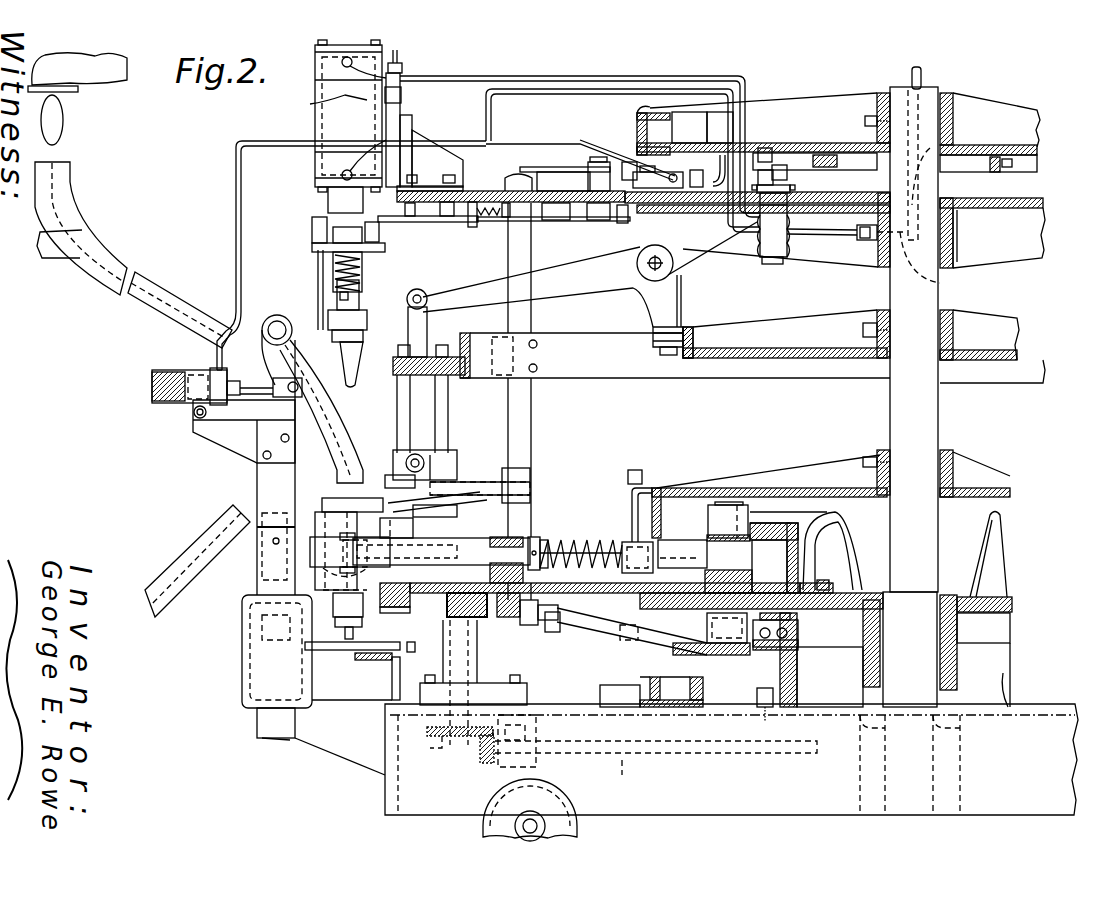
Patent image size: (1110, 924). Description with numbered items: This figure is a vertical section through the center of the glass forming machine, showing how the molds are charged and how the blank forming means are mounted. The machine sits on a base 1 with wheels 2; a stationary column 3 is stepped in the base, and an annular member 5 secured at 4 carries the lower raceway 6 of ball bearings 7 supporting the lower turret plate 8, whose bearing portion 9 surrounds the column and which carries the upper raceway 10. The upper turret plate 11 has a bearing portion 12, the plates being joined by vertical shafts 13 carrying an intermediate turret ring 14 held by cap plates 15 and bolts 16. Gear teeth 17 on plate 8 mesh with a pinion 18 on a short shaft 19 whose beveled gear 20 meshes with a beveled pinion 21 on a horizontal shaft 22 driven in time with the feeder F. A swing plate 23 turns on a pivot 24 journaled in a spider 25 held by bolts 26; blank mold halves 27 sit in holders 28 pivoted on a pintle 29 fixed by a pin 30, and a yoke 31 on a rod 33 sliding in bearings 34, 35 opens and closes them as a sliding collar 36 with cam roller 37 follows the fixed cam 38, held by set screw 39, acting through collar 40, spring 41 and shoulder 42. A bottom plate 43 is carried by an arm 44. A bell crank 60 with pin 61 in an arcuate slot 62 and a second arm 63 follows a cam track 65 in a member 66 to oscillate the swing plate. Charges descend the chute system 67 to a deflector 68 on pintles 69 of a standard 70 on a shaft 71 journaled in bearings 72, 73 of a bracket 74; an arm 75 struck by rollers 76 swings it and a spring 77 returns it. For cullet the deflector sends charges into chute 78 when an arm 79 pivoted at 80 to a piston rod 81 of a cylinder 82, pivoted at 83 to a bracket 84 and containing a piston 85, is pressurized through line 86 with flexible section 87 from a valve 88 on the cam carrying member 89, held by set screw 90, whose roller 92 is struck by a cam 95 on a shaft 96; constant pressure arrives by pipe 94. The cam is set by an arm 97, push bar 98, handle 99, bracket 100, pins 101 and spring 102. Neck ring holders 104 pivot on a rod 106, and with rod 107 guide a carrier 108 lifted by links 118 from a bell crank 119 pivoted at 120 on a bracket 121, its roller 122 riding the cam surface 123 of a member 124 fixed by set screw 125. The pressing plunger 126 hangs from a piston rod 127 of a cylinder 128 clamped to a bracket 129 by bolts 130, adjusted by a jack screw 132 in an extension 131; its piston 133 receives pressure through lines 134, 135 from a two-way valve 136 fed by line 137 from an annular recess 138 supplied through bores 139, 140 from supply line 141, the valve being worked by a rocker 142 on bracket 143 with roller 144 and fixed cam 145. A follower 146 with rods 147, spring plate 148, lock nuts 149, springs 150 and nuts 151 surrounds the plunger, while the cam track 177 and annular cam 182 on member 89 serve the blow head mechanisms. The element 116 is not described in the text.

The base 1 is at (1052, 748).
The wheels 2 is at (553, 800).
The stationary vertical column 3 is at (927, 692).
The securing means 4 is at (765, 690).
The annular member 5 is at (790, 682).
The lower raceway 6 is at (795, 651).
The ball bearings 7 is at (805, 622).
The lower turret plate 8 is at (1012, 606).
The bearing portion 9 is at (955, 670).
The upper raceway 10 is at (778, 613).
The upper turret plate 11 is at (1028, 199).
The bearing portion 12 is at (948, 198).
The rigid vertical shafts 13 is at (532, 408).
The intermediate turret ring 14 is at (620, 368).
The cap plates 15 is at (535, 330).
The bolts 16 is at (538, 352).
The gear teeth 17 is at (493, 622).
The pinion 18 is at (440, 581).
The short vertical shaft 19 is at (480, 673).
The beveled gear 20 is at (442, 737).
The beveled pinion 21 is at (485, 763).
The horizontally extending shaft 22 is at (622, 762).
The swing plate 23 is at (608, 573).
The vertical axis pivot 24 is at (727, 502).
The spider 25 is at (807, 527).
The bolts 26 is at (822, 580).
The blank mold halves 27 is at (320, 520).
The mold holder 28 is at (315, 555).
The vertical pintle 29 is at (413, 525).
The pin 30 is at (400, 584).
The V-shaped yoke member 31 is at (413, 555).
The rod 33 is at (478, 550).
The bearing 34 is at (536, 537).
The bearing 35 is at (708, 533).
The sliding collar 36 is at (623, 541).
The cam roller 37 is at (634, 527).
The fixed cam 38 is at (634, 482).
The set screw 39 is at (866, 457).
The collar 40 is at (536, 540).
The compression spring 41 is at (572, 540).
The shoulder 42 is at (662, 552).
The bottom plate 43 is at (337, 616).
The arm 44 is at (358, 635).
The bell crank 60 is at (628, 633).
The upstanding pin 61 is at (593, 627).
The arcuate slot 62 is at (575, 630).
The second arm 63 is at (712, 645).
The cam track 65 is at (663, 673).
The member 66 is at (633, 690).
The chute system 67 is at (106, 258).
The deflector 68 is at (343, 423).
The horizontal pintles 69 is at (270, 320).
The standard 70 is at (257, 489).
The vertical shaft 71 is at (250, 667).
The bearing 72 is at (257, 558).
The bearing 73 is at (257, 726).
The bracket 74 is at (313, 737).
The arm 75 is at (353, 647).
The rollers 76 is at (433, 667).
The spring 77 is at (372, 667).
The cullet chute 78 is at (188, 550).
The arm 79 is at (290, 338).
The pivot 80 is at (293, 400).
The piston rod 81 is at (255, 397).
The pneumatic cylinder 82 is at (177, 373).
The pivot 83 is at (195, 418).
The bracket 84 is at (222, 445).
The piston 85 is at (210, 370).
The pressure line 86 is at (235, 253).
The flexible section 87 is at (226, 320).
The valve 88 is at (678, 170).
The cam carrying member 89 is at (981, 110).
The set screw 90 is at (866, 116).
The cam roller 92 is at (628, 162).
The pipe 94 is at (722, 155).
The cam 95 is at (548, 166).
The short shaft 96 is at (598, 160).
The laterally extending arm 97 is at (620, 222).
The push bar 98 is at (447, 226).
The handle 99 is at (383, 222).
The bracket 100 is at (478, 222).
The pins 101 is at (413, 224).
The tension spring 102 is at (489, 200).
The neck ring holders 104 is at (338, 503).
The vertical rod 106 is at (400, 412).
The rod 107 is at (449, 422).
The neck ring carrier 108 is at (466, 462).
The block 116 is at (524, 476).
The links 118 is at (427, 323).
The bell crank 119 is at (577, 284).
The pivot 120 is at (678, 273).
The bracket 121 is at (705, 246).
The cam roller 122 is at (655, 337).
The cam surface 123 is at (681, 328).
The member 124 is at (798, 326).
The set screw 125 is at (867, 323).
The pressing plunger 126 is at (351, 371).
The piston rod 127 is at (362, 285).
The pneumatic cylinder 128 is at (313, 128).
The bracket 129 is at (437, 160).
The bolts 130 is at (404, 160).
The extension 131 is at (401, 96).
The jack screw 132 is at (398, 68).
The piston 133 is at (310, 100).
The pressure line 134 is at (503, 75).
The pressure line 135 is at (563, 89).
The two-way valve 136 is at (785, 258).
The line 137 is at (818, 236).
The annular recess 138 is at (956, 233).
The lateral bore 139 is at (940, 280).
The longitudinal bore 140 is at (956, 137).
The constant pressure supply line 141 is at (923, 79).
The rocker member 142 is at (789, 205).
The bracket 143 is at (760, 148).
The cam roller 144 is at (788, 170).
The fixed cam 145 is at (780, 165).
The follower 146 is at (370, 333).
The rods 147 is at (316, 283).
The spring plate 148 is at (338, 237).
The lock nuts 149 is at (315, 223).
The compression springs 150 is at (364, 263).
The nuts 151 is at (347, 256).
The cam track 177 is at (639, 118).
The annular cam 182 is at (836, 156).
The glass feeding device F is at (90, 78).